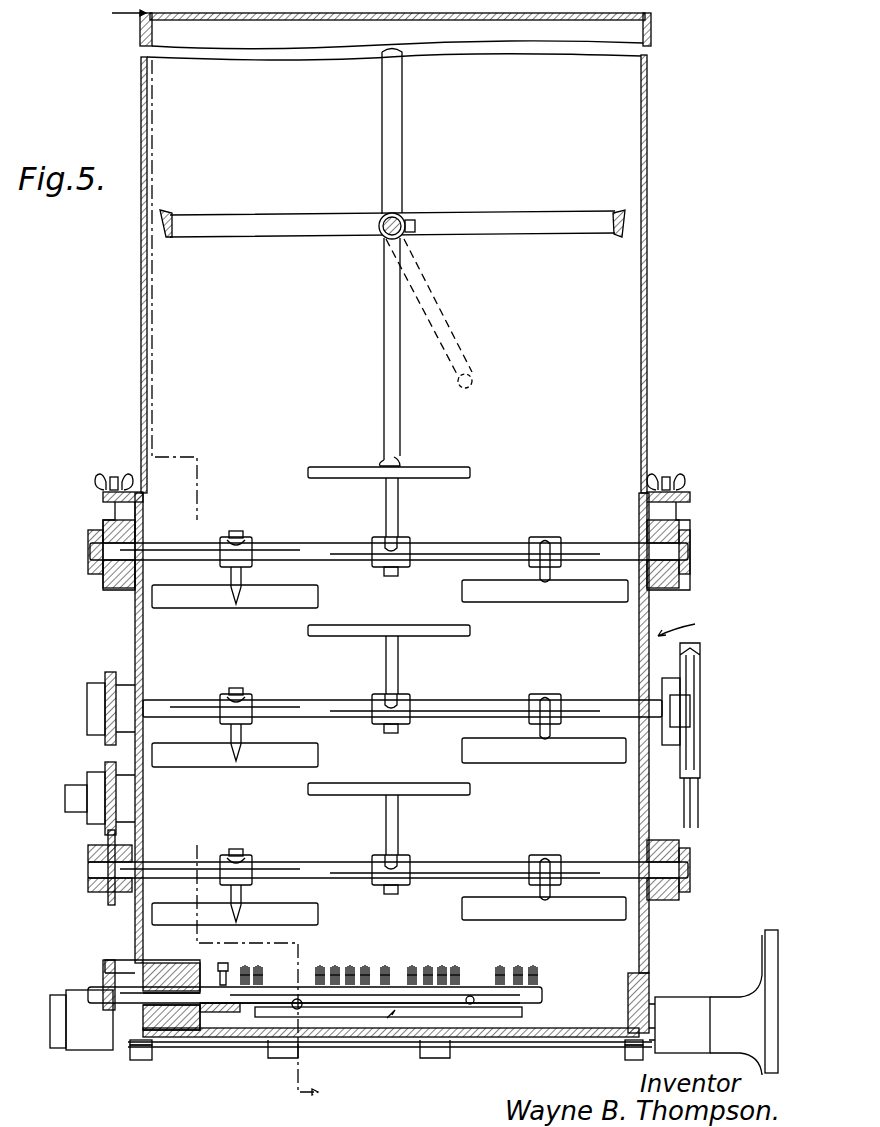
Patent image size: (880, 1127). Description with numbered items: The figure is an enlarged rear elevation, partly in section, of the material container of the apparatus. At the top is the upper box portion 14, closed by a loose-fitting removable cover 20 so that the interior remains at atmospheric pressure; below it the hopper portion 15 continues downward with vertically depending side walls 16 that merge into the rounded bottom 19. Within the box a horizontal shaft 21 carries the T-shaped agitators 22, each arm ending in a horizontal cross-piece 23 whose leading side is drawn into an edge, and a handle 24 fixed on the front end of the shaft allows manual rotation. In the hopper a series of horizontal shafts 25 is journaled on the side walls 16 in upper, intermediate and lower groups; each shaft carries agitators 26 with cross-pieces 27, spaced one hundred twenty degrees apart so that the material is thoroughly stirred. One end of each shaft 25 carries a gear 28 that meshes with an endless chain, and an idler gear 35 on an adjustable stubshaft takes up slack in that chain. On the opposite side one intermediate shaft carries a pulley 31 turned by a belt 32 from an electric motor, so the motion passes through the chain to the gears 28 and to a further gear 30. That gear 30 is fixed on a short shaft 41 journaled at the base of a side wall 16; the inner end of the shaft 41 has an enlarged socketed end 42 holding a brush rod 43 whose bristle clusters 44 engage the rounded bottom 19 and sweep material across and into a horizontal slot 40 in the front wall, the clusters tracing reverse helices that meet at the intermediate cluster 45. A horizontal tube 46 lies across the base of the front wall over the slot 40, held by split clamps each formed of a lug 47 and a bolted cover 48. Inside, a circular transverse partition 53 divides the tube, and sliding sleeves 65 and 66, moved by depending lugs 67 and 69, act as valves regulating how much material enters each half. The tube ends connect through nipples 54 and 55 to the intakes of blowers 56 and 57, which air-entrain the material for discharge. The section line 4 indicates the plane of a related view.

The section line 4- 4 is at (216, 556).
The upper or box portion 14 is at (141, 292).
The lower or hopper portion 15 is at (693, 625).
The side walls 16 is at (135, 628).
The rounded bottom 19 is at (541, 1042).
The removable cover 20 is at (653, 30).
The horizontal shaft 21 is at (404, 217).
The agitators 22 is at (400, 134).
The horizontal cross-piece 23 is at (168, 220).
The handle 24 is at (452, 327).
The horizontal shafts 25 is at (471, 552).
The agitators 26 is at (243, 582).
The horizontal cross-piece 27 is at (270, 610).
The gear 28 is at (105, 590).
The gear 30 is at (112, 962).
The pulley 31 is at (702, 678).
The belt 32 is at (700, 802).
The idler gear 35 is at (106, 768).
The horizontal slot 40 is at (262, 1014).
The short shaft 41 is at (98, 1000).
The enlarged end 42 is at (218, 1013).
The brush rod 43 is at (546, 995).
The bristle clusters 44 is at (352, 962).
The cluster 45 is at (402, 964).
The horizontal tube or conduit 46 is at (563, 1044).
The lug 47 is at (132, 1048).
The cover 48 is at (140, 1062).
The circular transverse partition 53 is at (372, 1015).
The nipple 54 is at (680, 1010).
The nipple 55 is at (80, 992).
The exhaust fan or blower 56 is at (728, 1010).
The exhaust fan or blower 57 is at (50, 1012).
The sleeve 65 is at (412, 1018).
The sleeve 66 is at (300, 1010).
The depending lug 67 is at (434, 1060).
The depending lug 69 is at (283, 1060).